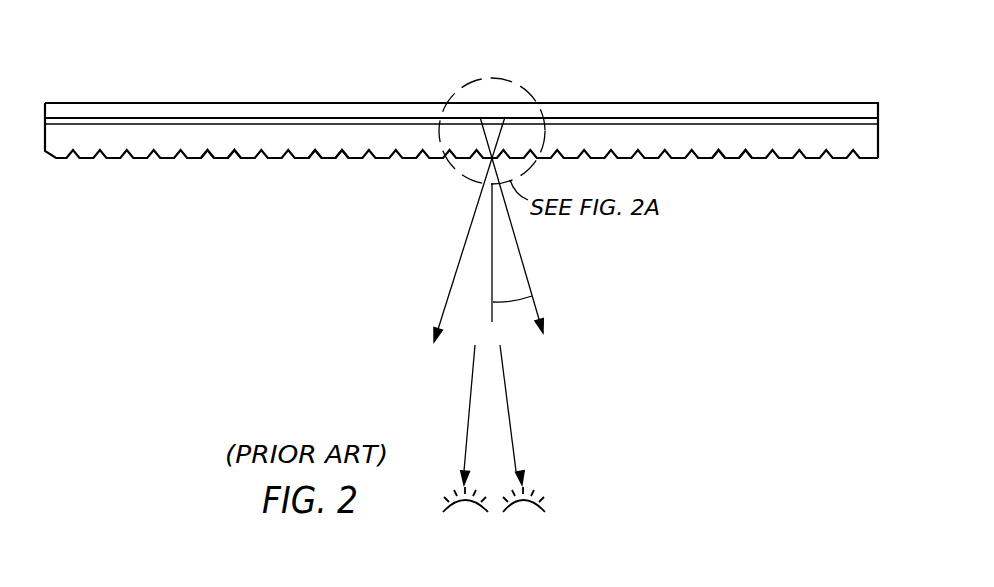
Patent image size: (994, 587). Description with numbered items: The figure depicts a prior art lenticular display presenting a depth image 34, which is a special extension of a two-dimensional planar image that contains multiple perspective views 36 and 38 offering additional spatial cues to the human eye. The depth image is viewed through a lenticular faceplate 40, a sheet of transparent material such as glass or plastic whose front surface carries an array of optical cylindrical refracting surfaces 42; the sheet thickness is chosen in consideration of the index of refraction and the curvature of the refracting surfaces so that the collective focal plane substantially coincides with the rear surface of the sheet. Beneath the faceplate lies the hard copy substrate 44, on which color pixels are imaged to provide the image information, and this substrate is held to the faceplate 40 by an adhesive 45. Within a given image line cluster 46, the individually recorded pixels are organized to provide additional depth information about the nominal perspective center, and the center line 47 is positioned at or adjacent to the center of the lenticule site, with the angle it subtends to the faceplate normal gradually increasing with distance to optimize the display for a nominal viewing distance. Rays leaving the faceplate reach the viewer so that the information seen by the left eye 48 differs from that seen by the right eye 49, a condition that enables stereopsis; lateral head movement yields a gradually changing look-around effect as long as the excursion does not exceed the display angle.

The depth image 34 is at (85, 183).
The perspective view 36 is at (472, 95).
The perspective view 38 is at (522, 100).
The lenticular faceplate 40 is at (222, 148).
The optical cylindrical refracting surfaces 42 is at (327, 162).
The hard copy substrate 44 is at (325, 102).
The adhesive 45 is at (157, 122).
The image line cluster 46 is at (494, 64).
The center line 47 is at (532, 296).
The left eye 48 is at (465, 512).
The right eye 49 is at (523, 512).